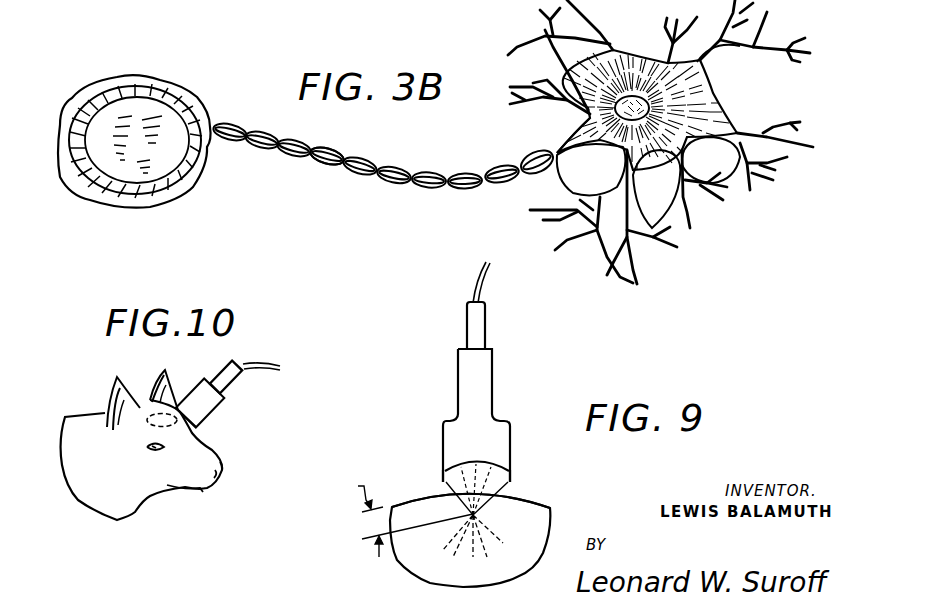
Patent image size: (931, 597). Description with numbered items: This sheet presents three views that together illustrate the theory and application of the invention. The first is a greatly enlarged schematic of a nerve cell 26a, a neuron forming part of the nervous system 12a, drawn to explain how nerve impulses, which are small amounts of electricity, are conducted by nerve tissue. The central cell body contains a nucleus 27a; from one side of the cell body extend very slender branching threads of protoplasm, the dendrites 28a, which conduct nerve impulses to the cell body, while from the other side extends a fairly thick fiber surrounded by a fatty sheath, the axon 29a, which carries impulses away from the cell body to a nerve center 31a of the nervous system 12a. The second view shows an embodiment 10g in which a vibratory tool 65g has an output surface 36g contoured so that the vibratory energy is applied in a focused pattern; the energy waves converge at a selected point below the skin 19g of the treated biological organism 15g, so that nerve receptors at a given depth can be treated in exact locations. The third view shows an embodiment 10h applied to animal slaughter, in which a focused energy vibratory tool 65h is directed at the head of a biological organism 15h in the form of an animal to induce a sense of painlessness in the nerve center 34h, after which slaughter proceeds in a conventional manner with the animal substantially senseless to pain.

In FIG. 3B, the nerve center 31a is at (160, 84).
In FIG. 3B, the nervous system 12a is at (369, 183).
In FIG. 3B, the axons 29a is at (352, 140).
In FIG. 3B, the nucleus 27a is at (593, 118).
In FIG. 3B, the nerve cell 26a is at (690, 88).
In FIG. 3B, the dendrites 28a is at (775, 150).
In FIG. 10, the biological organism 15h is at (141, 506).
In FIG. 10, the nerve center 34h is at (155, 416).
In FIG. 10, the focused energy vibratory tool 65h is at (207, 420).
In FIG. 10, the embodiment 10h is at (206, 436).
In FIG. 9, the vibratory tool 65g is at (487, 383).
In FIG. 9, the output surface 36g is at (505, 475).
In FIG. 9, the embodiment 10g is at (438, 479).
In FIG. 9, the biological organism 15g is at (493, 588).
In FIG. 9, the skin 19g is at (548, 510).